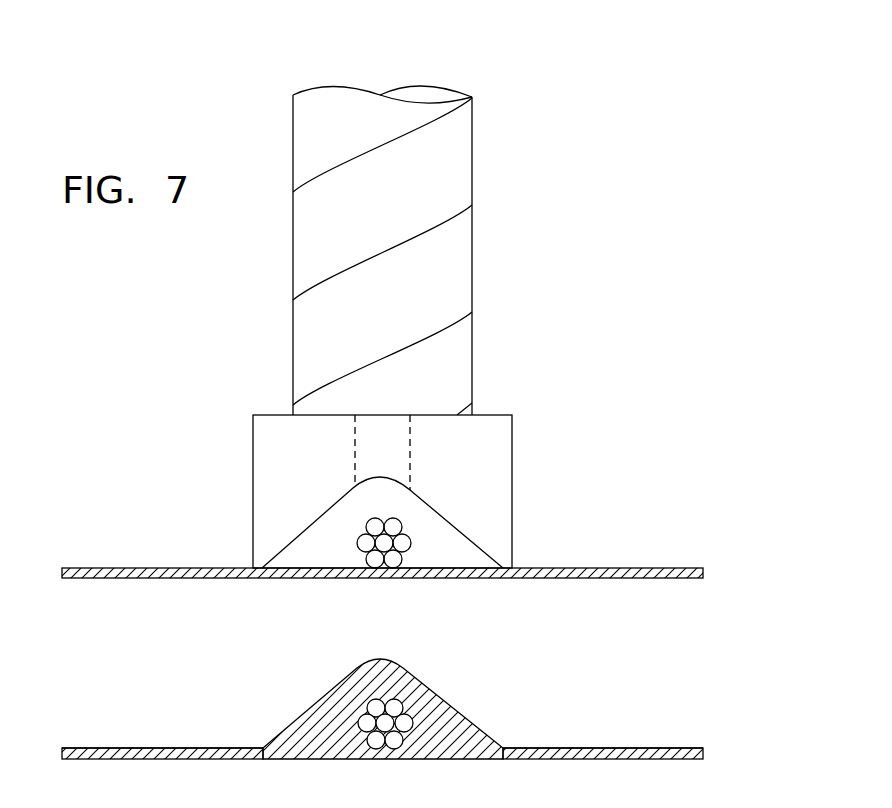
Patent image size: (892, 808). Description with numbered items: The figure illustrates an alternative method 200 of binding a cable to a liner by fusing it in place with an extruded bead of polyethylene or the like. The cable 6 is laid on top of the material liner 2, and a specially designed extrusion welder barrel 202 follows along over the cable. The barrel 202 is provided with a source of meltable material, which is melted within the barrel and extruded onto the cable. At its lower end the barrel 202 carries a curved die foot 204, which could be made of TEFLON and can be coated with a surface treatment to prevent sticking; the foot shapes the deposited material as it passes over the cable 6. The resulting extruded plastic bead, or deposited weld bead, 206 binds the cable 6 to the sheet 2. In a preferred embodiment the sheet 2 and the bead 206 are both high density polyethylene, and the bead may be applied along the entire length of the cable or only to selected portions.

The method of binding a cable to a liner 200 is at (603, 132).
The extrusion welder barrel 202 is at (460, 280).
The curved die foot 204 is at (487, 462).
The cable 6 is at (355, 540).
The material liner 2 is at (650, 568).
The extruded plastic bead 206 is at (443, 700).